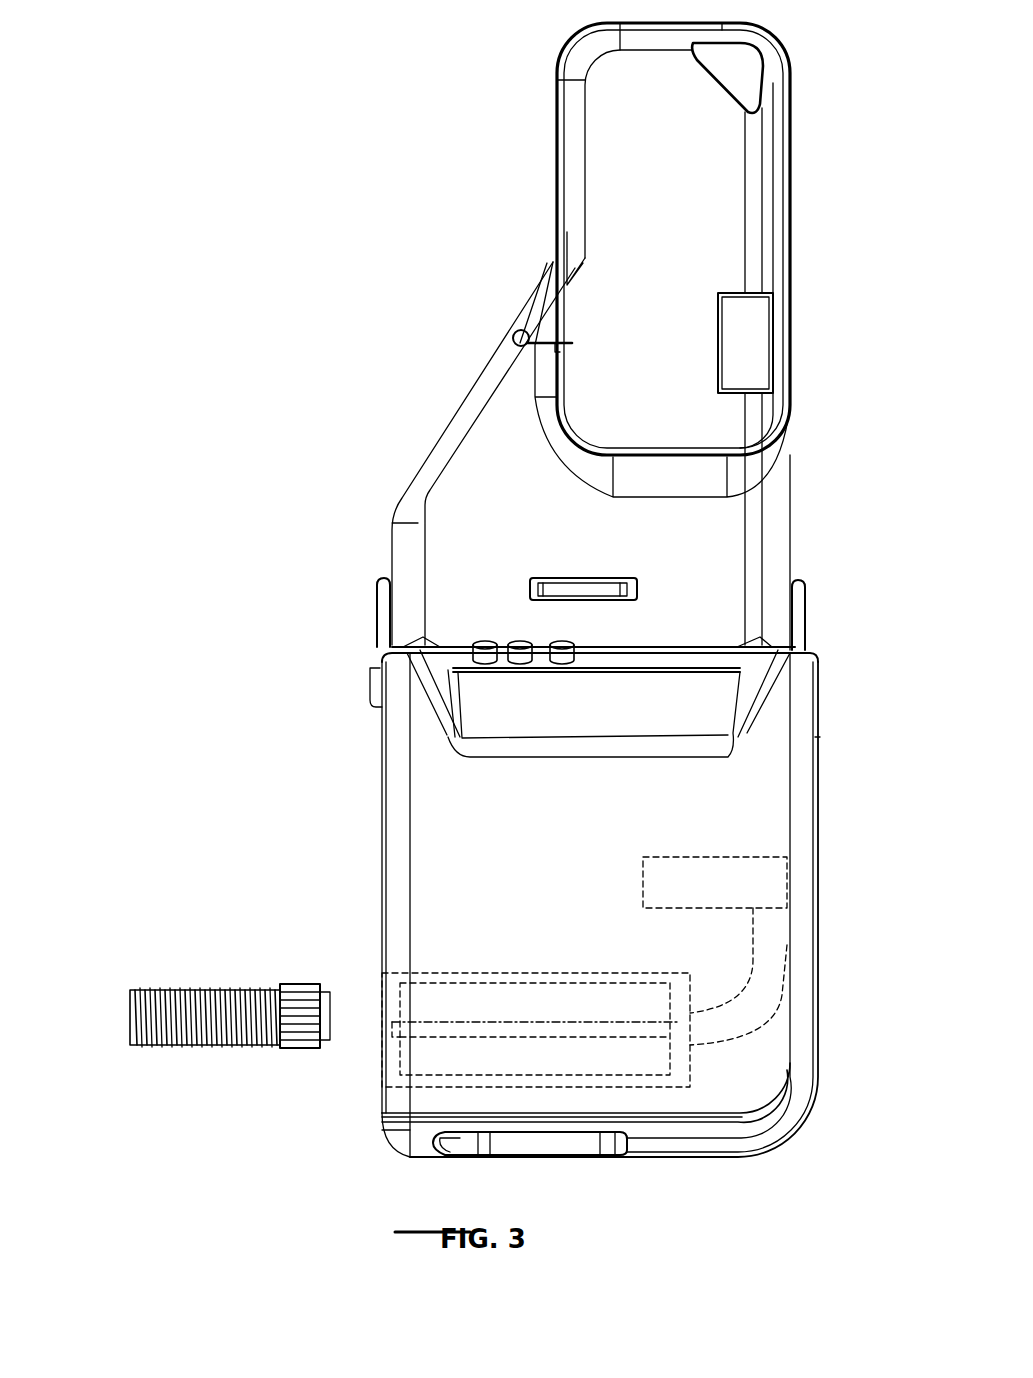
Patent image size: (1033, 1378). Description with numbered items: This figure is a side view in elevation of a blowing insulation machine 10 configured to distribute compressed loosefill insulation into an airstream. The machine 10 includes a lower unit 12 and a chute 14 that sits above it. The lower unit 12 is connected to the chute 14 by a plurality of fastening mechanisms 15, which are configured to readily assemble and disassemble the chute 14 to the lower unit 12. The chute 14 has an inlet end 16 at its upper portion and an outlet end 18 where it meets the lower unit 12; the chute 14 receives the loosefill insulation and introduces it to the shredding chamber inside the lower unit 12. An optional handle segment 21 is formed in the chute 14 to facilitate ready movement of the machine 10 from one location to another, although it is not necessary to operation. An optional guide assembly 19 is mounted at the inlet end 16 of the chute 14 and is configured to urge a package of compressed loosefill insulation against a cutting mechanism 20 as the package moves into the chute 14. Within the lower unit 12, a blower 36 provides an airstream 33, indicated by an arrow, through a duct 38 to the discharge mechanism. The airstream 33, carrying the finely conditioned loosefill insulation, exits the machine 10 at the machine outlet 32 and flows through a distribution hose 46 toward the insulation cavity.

The blowing insulation machine 10 is at (505, 122).
The lower unit 12 is at (372, 806).
The chute 14 is at (555, 158).
The fastening mechanisms 15 is at (372, 606).
The inlet end 16 is at (672, 211).
The outlet end 18 is at (695, 643).
The guide assembly 19 is at (790, 330).
The cutting mechanism 20 is at (515, 337).
The handle segment 21 is at (763, 57).
The machine outlet 32 is at (382, 1050).
The airstream 33 is at (345, 1017).
The blower 36 is at (733, 857).
The duct 38 is at (787, 945).
The distribution hose 46 is at (206, 1048).